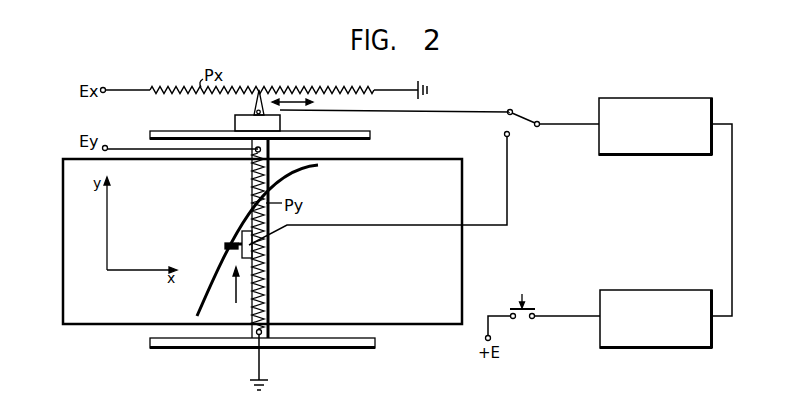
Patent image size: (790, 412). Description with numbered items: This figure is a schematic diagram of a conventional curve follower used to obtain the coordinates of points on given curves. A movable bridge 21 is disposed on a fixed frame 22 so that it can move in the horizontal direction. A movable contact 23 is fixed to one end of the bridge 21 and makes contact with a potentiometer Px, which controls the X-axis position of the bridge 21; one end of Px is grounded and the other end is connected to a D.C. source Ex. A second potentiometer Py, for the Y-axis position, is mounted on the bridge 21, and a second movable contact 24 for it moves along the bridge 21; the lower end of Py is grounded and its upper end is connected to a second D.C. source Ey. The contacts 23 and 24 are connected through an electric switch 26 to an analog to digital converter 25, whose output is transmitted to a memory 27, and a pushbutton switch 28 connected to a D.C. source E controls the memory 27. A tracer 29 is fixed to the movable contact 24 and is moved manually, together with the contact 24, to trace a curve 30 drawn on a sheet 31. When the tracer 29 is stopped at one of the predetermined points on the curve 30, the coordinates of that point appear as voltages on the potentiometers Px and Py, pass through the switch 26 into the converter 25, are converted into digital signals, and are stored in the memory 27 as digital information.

The movable bridge 21 is at (267, 292).
The fixed frame 22 is at (335, 342).
The movable contact 23 is at (254, 103).
The second movable contact 24 is at (253, 255).
The analog to digital converter 25 is at (668, 87).
The electric switch 26 is at (526, 106).
The memory 27 is at (681, 280).
The pushbutton switch 28 is at (555, 303).
The tracer 29 is at (226, 246).
The curve 30 is at (207, 277).
The sheet 31 is at (422, 325).